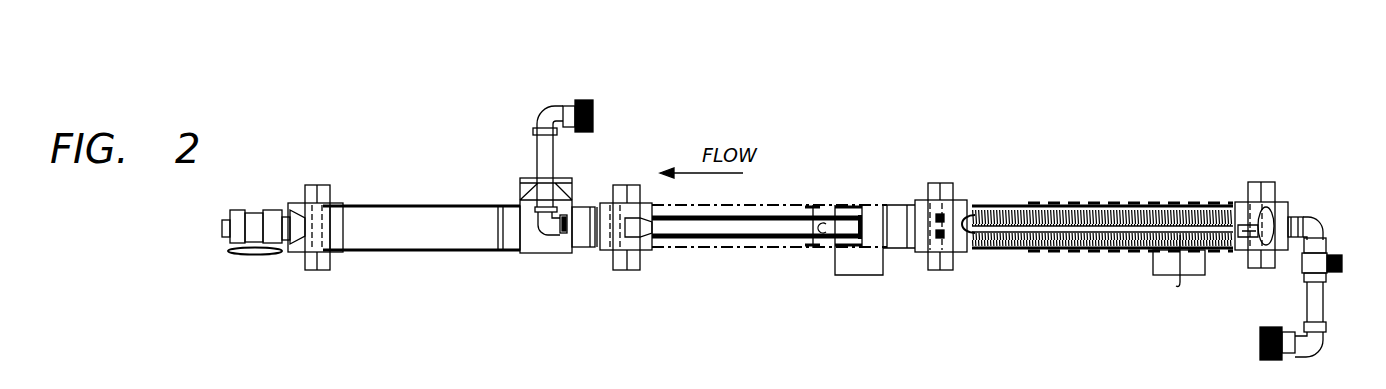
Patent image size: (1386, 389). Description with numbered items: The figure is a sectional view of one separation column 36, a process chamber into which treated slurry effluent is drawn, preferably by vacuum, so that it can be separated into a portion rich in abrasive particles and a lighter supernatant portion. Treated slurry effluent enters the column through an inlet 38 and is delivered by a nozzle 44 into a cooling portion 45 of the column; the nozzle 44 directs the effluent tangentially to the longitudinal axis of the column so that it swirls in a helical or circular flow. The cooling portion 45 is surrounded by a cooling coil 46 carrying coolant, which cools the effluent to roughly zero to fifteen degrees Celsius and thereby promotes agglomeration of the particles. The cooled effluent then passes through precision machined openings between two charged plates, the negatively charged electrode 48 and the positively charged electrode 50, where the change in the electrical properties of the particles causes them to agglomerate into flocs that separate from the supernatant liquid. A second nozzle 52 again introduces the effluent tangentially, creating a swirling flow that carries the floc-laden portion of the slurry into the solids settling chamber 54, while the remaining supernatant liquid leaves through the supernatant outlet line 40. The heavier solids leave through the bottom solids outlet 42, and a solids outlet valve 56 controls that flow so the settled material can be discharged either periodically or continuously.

The separation column 36 is at (947, 166).
The inlet 38 is at (1323, 303).
The supernatant outlet line 40 is at (595, 104).
The bottom solids outlet 42 is at (287, 203).
The nozzle 44 is at (1257, 202).
The cooling portion 45 is at (1065, 253).
The cooling coil 46 is at (1130, 206).
The negatively charged electrode 48 is at (863, 247).
The positively charged electrode 50 is at (815, 248).
The second nozzle 52 is at (638, 250).
The solids settling chamber 54 is at (402, 240).
The solids outlet valve 56 is at (253, 251).